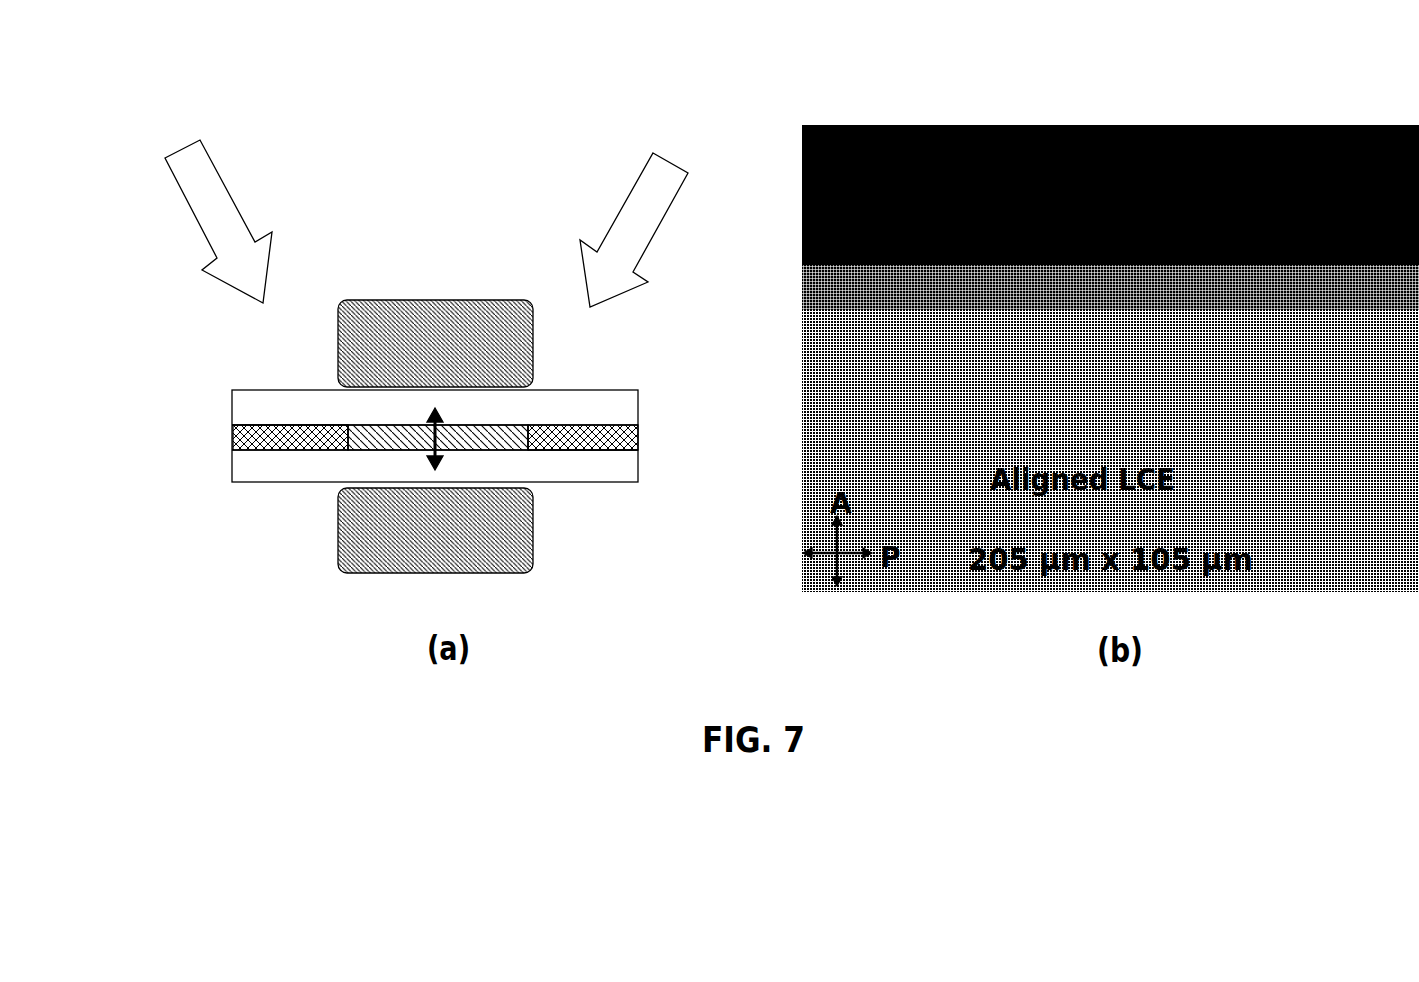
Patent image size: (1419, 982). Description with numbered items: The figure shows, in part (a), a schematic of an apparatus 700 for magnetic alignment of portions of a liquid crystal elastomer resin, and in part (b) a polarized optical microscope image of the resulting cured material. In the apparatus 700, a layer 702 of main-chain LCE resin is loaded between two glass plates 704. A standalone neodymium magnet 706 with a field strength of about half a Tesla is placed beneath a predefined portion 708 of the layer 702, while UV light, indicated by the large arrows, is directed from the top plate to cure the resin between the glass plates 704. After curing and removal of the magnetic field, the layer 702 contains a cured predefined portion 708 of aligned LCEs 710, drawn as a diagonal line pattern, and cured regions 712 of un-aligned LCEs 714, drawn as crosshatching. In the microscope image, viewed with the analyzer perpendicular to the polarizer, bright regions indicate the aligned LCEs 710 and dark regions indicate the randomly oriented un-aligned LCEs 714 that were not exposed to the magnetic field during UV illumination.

The apparatus 700 is at (321, 86).
The layer 702 is at (218, 438).
The glass plates 704 is at (320, 418).
The neodymium magnet 706 is at (414, 288).
The predefined portion 708 is at (517, 410).
The aligned LCEs 710 is at (497, 448).
The cured regions 712 is at (255, 412).
The un-aligned LCEs 714 is at (255, 442).